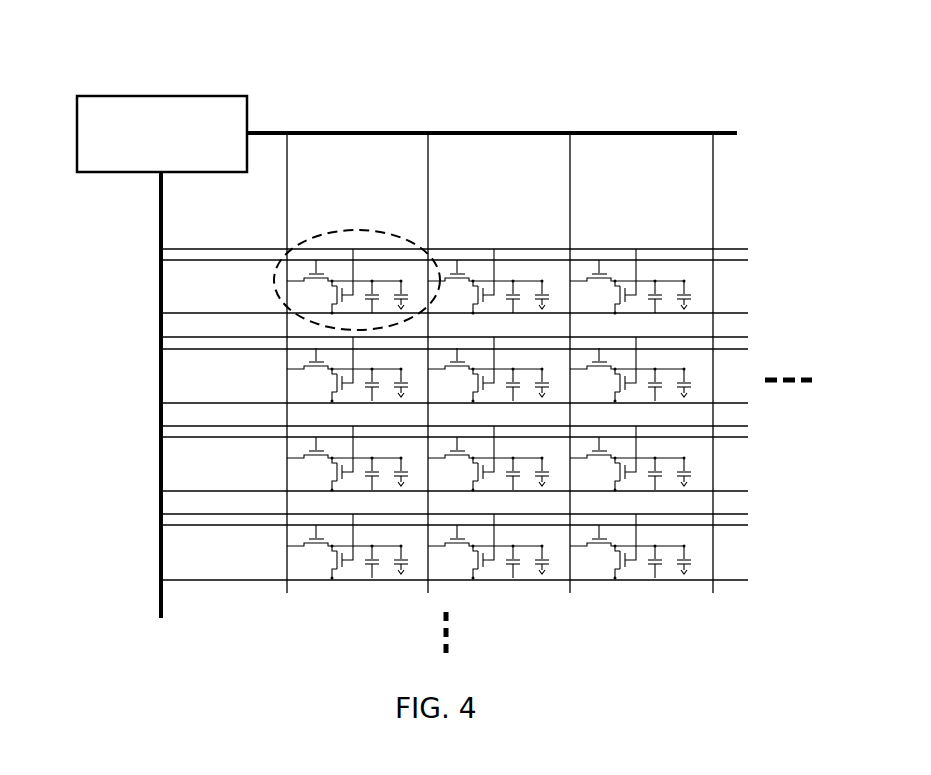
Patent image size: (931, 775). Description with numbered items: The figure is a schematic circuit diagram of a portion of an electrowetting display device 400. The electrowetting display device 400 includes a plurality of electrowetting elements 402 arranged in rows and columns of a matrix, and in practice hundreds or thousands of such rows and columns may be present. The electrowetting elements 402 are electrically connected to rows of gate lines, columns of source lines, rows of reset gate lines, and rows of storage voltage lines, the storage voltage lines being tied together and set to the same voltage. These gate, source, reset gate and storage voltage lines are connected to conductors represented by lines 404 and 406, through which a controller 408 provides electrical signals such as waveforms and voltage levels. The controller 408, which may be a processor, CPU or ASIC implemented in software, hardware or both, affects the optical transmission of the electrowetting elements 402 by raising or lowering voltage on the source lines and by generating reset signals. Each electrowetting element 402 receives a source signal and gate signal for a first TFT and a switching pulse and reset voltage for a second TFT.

The electrowetting display device 400 is at (454, 342).
The electrowetting element 402 is at (314, 236).
The line 404 is at (185, 188).
The line 406 is at (357, 152).
The controller 408 is at (143, 163).